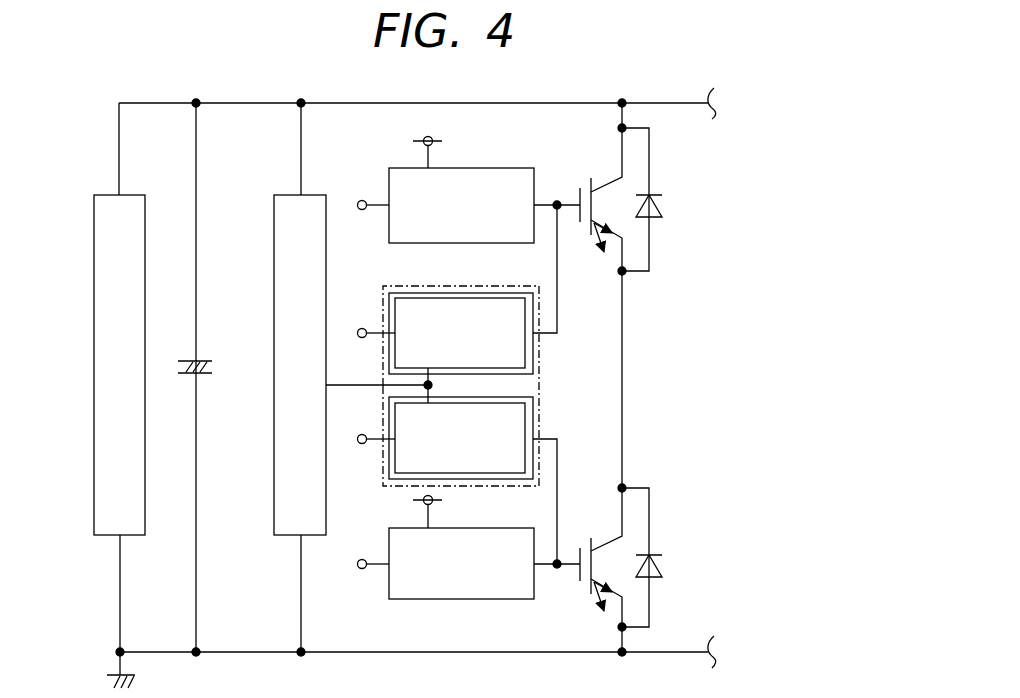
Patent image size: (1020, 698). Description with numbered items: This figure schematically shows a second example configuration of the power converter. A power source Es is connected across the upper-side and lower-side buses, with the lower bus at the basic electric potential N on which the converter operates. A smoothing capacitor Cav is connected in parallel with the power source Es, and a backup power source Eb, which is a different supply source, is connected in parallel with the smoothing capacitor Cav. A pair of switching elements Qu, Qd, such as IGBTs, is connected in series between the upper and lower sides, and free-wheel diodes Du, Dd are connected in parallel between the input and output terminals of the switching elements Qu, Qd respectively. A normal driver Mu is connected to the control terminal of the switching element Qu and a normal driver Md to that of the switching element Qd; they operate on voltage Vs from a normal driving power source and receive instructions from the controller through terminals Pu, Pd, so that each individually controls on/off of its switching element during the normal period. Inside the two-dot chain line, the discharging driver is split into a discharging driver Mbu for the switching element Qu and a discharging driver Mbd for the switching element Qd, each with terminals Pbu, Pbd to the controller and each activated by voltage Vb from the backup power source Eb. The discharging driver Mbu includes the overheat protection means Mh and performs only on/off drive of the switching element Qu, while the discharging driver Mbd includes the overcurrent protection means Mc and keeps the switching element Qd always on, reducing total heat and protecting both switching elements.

The basic electric potential N is at (400, 667).
The power source Es is at (94, 261).
The backup power source Eb is at (274, 261).
The smoothing capacitor Cav is at (211, 377).
The voltage supplied from normal driving power source Vs is at (411, 328).
The voltage supplied from backup power source Vb is at (379, 381).
The terminal of normal driver Mu Pu is at (369, 192).
The terminal of normal driver Md Pd is at (369, 551).
The terminal of discharging driver Mbu Pbu is at (368, 319).
The terminal of discharging driver Mbd Pbd is at (368, 425).
The normal driver Mu is at (477, 168).
The normal driver Md is at (490, 599).
The discharging driver Mbu is at (475, 293).
The discharging driver Mbd is at (463, 481).
The overheat protection means Mh is at (525, 357).
The overcurrent protection means Mc is at (525, 417).
The switching element Qu is at (602, 295).
The switching element Qd is at (602, 568).
The diode Du is at (659, 199).
The diode Dd is at (659, 557).